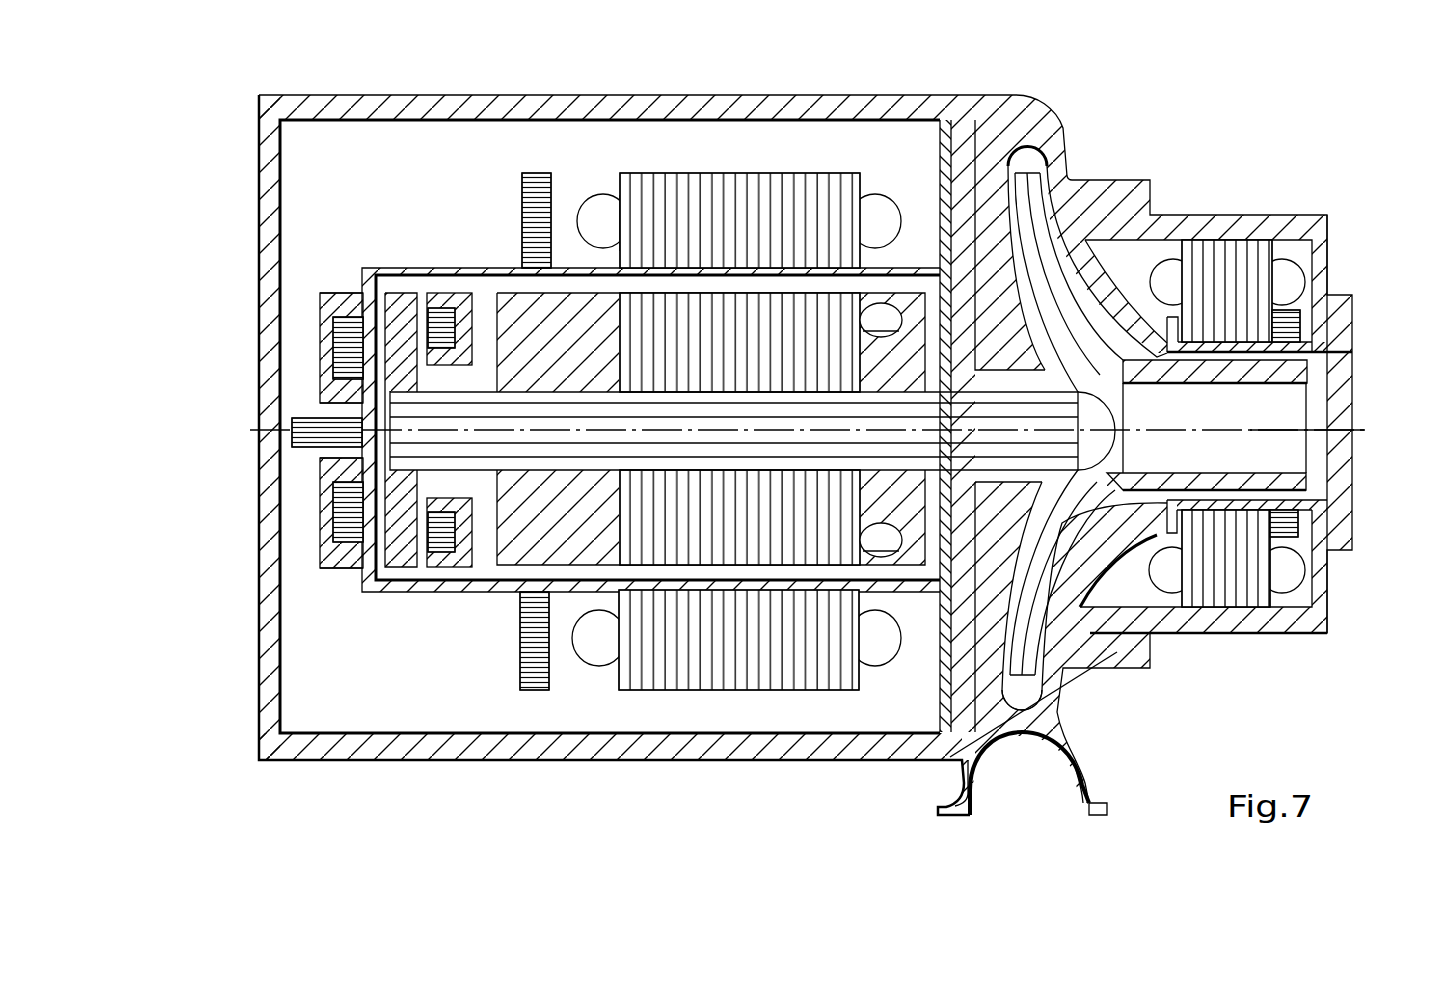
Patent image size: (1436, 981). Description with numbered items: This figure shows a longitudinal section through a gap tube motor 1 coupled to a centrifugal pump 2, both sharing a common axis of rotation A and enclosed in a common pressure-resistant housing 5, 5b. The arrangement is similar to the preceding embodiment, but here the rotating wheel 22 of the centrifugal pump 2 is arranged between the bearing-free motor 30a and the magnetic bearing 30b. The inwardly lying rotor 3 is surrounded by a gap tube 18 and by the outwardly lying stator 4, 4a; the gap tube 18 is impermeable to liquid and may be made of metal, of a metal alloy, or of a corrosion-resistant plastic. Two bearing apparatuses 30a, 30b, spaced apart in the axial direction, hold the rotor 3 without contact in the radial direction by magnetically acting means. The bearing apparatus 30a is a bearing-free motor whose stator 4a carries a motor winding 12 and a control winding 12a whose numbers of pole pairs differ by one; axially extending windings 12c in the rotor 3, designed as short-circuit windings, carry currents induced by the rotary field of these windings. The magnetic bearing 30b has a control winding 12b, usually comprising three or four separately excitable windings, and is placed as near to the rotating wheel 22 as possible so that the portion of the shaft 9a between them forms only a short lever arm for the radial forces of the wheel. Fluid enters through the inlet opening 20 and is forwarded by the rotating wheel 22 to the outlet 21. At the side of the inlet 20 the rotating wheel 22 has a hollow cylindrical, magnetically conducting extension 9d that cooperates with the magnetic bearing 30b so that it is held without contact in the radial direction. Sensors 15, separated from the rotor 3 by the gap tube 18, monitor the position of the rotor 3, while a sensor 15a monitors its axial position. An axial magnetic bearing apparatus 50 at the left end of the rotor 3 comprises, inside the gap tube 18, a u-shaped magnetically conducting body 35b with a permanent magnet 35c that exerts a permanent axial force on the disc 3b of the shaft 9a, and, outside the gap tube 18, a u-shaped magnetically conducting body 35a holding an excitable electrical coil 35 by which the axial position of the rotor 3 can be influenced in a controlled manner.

The gap tube motor 1 is at (1338, 60).
The centrifugal pump 2 is at (1101, 60).
The rotor 3 is at (676, 507).
The disc 3b is at (362, 568).
The stator 4 is at (748, 484).
The stator core 4a is at (748, 670).
The pressure-resistant housing 5 is at (473, 748).
The housing part 5b is at (1053, 157).
The shaft 9a is at (413, 457).
The hollow cylindrical extension 9d is at (1290, 478).
The motor winding 12 is at (882, 217).
The control winding 12a is at (867, 212).
The control winding 12b is at (1282, 285).
The short circuit winding 12c is at (881, 428).
The sensors 15 is at (538, 198).
The sensor 15a is at (298, 440).
The gap tube 18 is at (440, 268).
The inlet opening 20 is at (1335, 372).
The outlet 21 is at (1022, 690).
The rotating wheel 22 is at (1047, 585).
The bearing apparatus 30a is at (568, 839).
The bearing apparatus 30b is at (1320, 654).
The excitable electrical coil 35 is at (321, 345).
The magnetically conducting body 35a is at (337, 307).
The magnetically conducting body 35b is at (450, 302).
The permanent magnet 35c is at (450, 316).
The axial magnetic bearing apparatus 50 is at (295, 839).
The axis of rotation A is at (1365, 430).